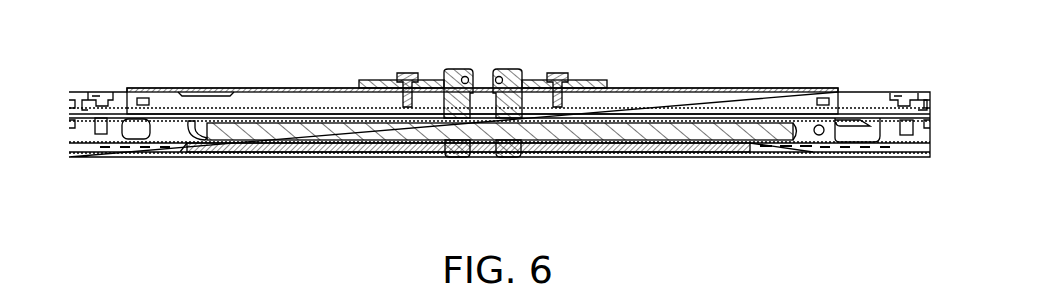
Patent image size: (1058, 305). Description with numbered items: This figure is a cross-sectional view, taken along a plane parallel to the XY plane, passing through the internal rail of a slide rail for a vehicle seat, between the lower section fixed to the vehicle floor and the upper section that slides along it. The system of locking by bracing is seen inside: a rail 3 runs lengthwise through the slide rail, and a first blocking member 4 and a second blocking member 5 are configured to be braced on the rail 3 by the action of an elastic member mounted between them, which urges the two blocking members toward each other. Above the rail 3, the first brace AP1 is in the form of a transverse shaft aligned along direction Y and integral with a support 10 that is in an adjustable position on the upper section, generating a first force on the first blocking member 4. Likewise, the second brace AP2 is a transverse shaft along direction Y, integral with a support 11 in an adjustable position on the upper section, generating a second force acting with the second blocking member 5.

The support 10 is at (376, 80).
The first brace AP1 is at (465, 74).
The second brace AP2 is at (500, 76).
The support 11 is at (592, 80).
The rail 3 is at (310, 157).
The first blocking member 4 is at (455, 157).
The second blocking member 5 is at (510, 157).